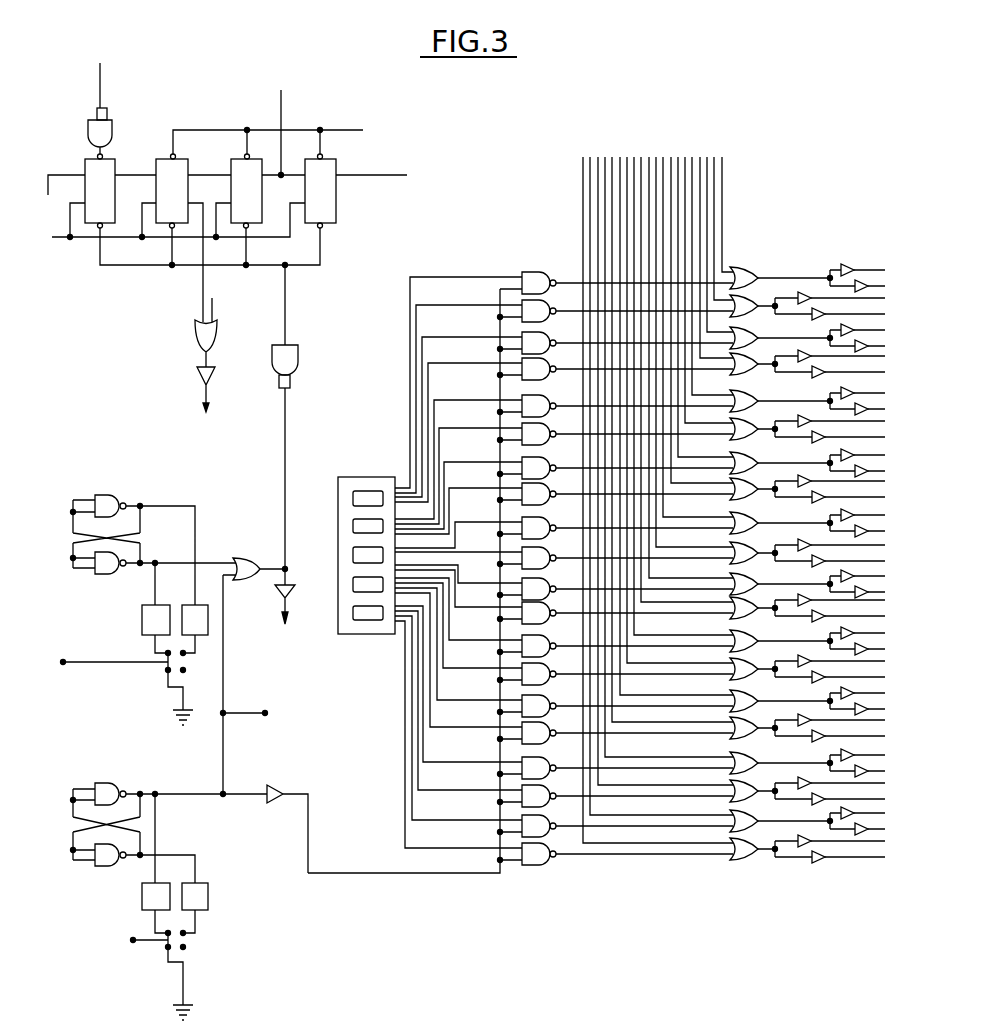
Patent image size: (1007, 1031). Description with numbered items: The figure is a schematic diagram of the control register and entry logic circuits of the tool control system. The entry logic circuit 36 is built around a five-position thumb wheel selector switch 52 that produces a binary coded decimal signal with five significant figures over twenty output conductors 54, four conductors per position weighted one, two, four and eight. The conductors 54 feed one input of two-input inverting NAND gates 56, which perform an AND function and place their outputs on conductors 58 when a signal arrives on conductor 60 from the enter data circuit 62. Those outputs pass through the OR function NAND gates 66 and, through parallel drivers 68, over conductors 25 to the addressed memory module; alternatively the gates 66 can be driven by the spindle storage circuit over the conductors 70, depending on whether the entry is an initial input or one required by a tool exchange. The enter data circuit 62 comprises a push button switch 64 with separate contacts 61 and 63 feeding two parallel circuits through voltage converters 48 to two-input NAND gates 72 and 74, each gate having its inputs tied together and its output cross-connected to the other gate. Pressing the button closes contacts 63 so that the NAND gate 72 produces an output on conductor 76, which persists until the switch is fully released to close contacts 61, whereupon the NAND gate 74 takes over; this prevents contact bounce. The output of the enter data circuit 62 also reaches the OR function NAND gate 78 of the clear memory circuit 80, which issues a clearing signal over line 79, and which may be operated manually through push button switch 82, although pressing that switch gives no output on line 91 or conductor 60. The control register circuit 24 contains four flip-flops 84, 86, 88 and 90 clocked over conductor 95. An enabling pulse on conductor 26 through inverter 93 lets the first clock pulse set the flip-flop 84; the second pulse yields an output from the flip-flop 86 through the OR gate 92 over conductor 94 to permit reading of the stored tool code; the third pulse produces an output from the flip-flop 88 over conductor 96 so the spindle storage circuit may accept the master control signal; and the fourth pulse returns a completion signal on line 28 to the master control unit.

The control register circuit 24 is at (148, 267).
The conductors 25 is at (845, 857).
The conductor 26 is at (100, 70).
The line 28 is at (355, 173).
The entry logic circuit 36 is at (460, 873).
The voltage converters 48 is at (167, 906).
The thumb wheel selector switch 52 is at (362, 477).
The output conductors 54 is at (405, 673).
The inverting NAND gates 56 is at (525, 268).
The conductors 58 is at (608, 853).
The conductor 60 is at (308, 817).
The contacts 61 is at (163, 950).
The enter data circuit 62 is at (110, 822).
The contacts 63 is at (185, 948).
The push button switch 64 is at (148, 948).
The OR function NAND gates 66 is at (742, 858).
The parallel drivers 68 is at (850, 265).
The conductors 70 is at (724, 210).
The NAND gate 72 is at (108, 782).
The NAND gate 74 is at (108, 867).
The conductor 76 is at (197, 796).
The OR function NAND gate 78 is at (243, 582).
The line 79 is at (287, 610).
The clear memory circuit 80 is at (73, 521).
The push button switch 82 is at (147, 665).
The flip-flop 84 is at (115, 170).
The flip-flop 86 is at (188, 170).
The flip-flop 88 is at (262, 188).
The flip-flop 90 is at (336, 203).
The line 91 is at (213, 300).
The OR gate 92 is at (195, 337).
The inverter 93 is at (90, 126).
The conductor 94 is at (202, 386).
The conductor 95 is at (60, 238).
The conductor 96 is at (283, 105).